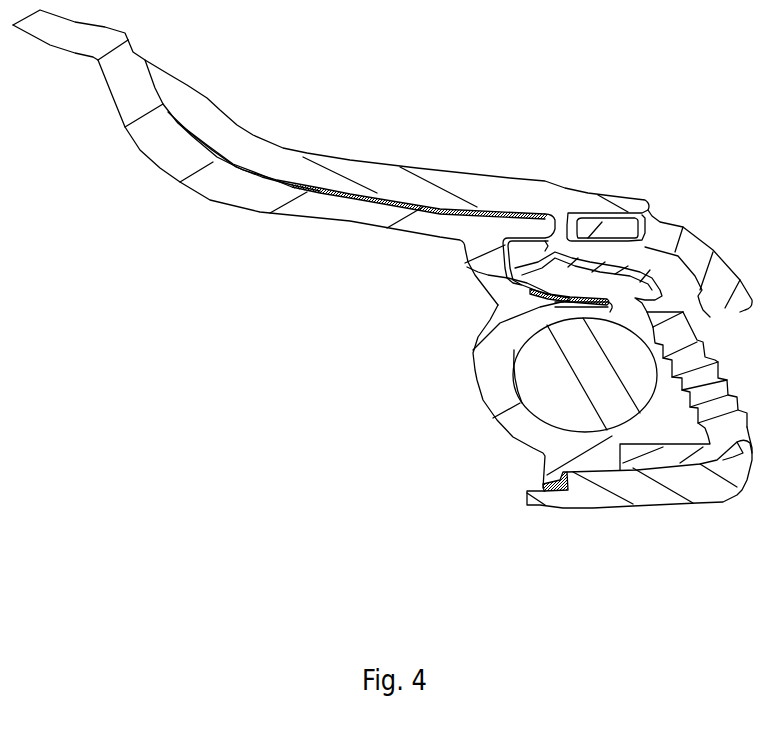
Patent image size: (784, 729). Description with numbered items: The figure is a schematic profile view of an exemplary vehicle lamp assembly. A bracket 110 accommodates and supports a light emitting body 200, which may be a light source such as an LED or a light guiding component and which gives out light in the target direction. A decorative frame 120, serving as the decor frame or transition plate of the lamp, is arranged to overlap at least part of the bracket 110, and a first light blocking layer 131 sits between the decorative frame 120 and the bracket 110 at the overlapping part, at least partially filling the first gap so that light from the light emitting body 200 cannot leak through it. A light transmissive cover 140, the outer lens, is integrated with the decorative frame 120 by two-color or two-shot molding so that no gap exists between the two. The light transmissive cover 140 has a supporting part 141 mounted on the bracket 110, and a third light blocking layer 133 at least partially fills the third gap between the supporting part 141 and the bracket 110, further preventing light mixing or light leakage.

The bracket 110 is at (497, 363).
The decorative frame 120 is at (365, 177).
The first light blocking layer 131 is at (497, 208).
The third light blocking layer 133 is at (525, 297).
The light transmissive cover 140 is at (707, 370).
The supporting part 141 is at (457, 247).
The light emitting body 200 is at (570, 390).